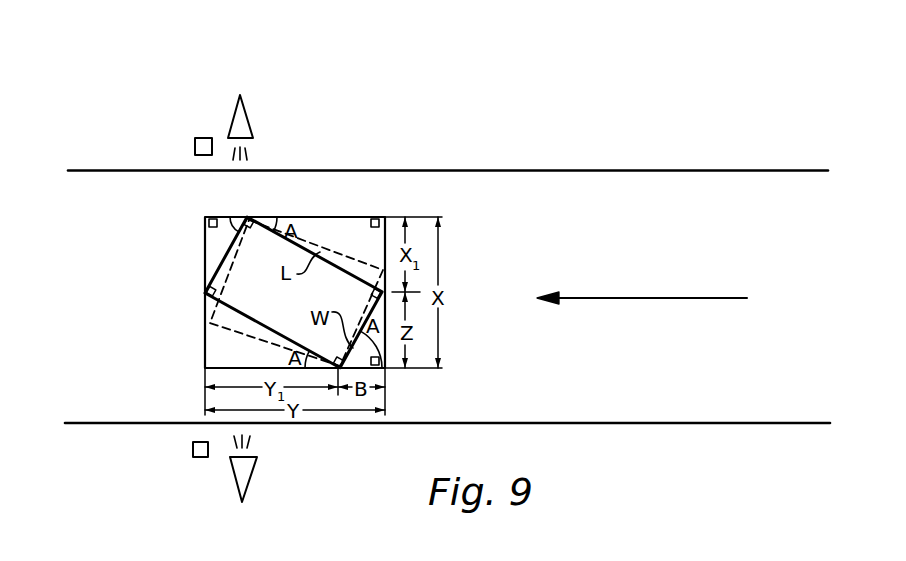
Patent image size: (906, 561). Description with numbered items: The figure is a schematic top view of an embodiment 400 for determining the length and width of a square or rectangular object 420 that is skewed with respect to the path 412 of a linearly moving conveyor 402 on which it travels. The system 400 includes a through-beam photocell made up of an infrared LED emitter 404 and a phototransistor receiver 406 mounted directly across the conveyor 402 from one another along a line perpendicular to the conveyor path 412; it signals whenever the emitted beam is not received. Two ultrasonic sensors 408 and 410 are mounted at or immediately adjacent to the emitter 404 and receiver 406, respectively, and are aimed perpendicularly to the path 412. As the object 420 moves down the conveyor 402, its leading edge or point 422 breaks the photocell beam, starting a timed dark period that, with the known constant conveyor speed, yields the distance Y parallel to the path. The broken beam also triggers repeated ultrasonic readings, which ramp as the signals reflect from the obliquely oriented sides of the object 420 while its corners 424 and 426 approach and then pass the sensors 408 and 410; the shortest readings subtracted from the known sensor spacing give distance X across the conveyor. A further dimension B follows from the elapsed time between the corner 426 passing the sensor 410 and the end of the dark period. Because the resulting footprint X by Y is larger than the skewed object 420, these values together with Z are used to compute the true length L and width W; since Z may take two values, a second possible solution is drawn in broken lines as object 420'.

The embodiment 400 is at (445, 150).
The conveyor 402 is at (667, 172).
The infrared LED emitter 404 is at (196, 147).
The phototransistor receiver 406 is at (193, 449).
The ultrasonic sensor 408 is at (247, 122).
The ultrasonic sensor 410 is at (245, 468).
The conveyor path 412 is at (655, 299).
The object 420 is at (263, 276).
The object in broken lines 420' is at (305, 245).
The leading edge or point 422 is at (205, 296).
The corner 424 is at (250, 218).
The corner 426 is at (386, 357).